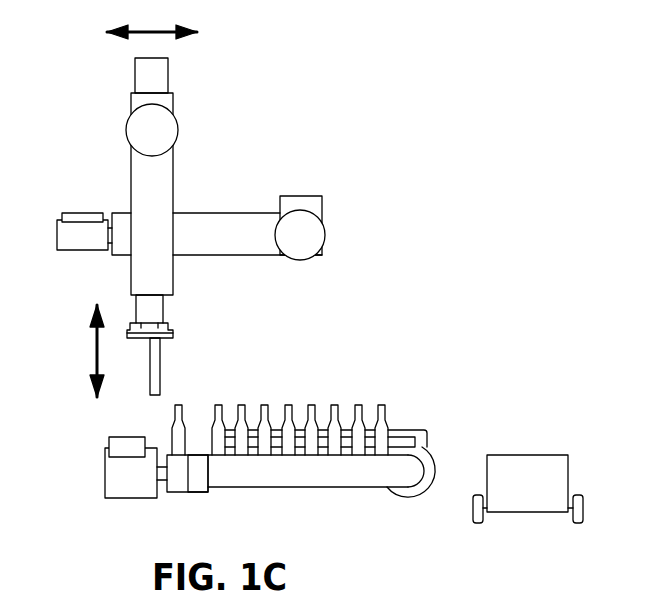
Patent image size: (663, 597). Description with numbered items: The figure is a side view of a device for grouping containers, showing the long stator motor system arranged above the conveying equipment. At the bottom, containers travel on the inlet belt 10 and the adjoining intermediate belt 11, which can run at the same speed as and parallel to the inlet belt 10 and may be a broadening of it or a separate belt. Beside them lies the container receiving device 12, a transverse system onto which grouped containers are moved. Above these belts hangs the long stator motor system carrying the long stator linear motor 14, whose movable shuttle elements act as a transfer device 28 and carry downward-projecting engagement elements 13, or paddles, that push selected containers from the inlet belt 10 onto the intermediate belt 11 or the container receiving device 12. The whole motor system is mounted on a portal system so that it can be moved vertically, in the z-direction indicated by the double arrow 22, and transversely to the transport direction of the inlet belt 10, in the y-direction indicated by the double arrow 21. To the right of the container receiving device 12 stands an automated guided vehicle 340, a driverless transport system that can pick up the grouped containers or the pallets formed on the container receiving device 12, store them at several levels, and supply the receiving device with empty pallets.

The inlet belt 10 is at (125, 479).
The intermediate belt 11 is at (197, 480).
The container receiving device 12 is at (433, 472).
The engagement elements 13 is at (158, 360).
The long stator linear motor 14 is at (145, 305).
The y-direction 21 is at (143, 30).
The vertical z-direction 22 is at (95, 355).
The transfer device 28 is at (188, 314).
The automated guided vehicle 340 is at (545, 465).